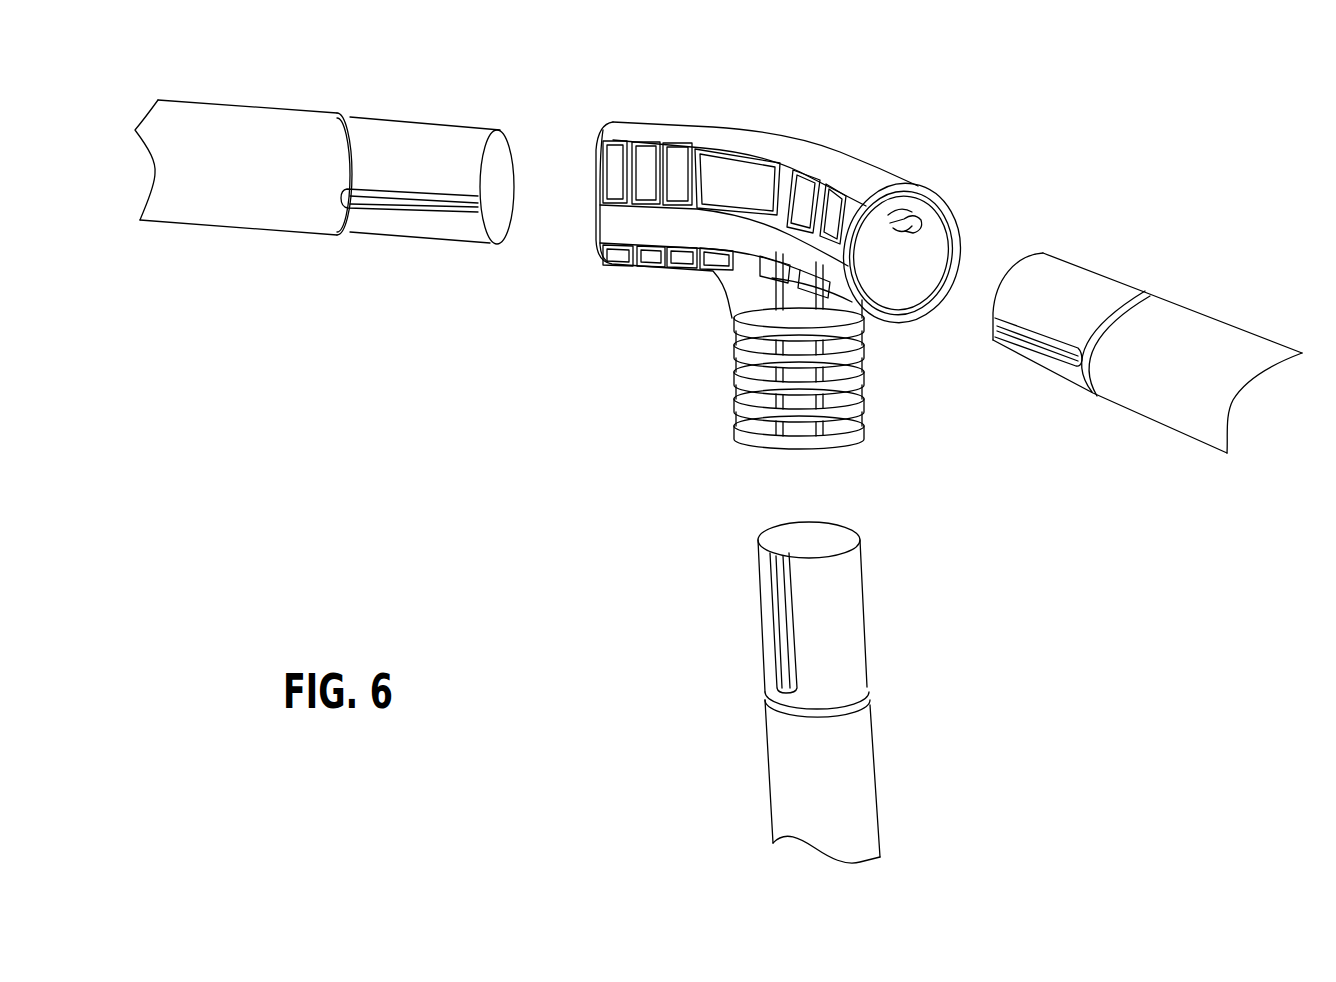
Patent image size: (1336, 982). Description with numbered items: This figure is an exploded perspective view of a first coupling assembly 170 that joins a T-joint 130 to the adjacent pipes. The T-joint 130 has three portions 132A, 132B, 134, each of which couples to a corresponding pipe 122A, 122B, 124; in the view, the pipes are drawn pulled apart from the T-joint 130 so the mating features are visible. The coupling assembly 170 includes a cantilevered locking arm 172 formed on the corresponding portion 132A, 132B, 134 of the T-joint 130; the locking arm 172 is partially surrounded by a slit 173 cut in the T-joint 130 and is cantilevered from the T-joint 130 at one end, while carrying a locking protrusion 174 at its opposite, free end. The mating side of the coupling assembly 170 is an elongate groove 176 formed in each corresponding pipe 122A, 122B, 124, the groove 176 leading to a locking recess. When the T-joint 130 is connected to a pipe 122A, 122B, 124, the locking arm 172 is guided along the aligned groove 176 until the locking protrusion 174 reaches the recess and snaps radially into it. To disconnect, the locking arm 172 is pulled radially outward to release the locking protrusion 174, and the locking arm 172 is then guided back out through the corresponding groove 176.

The pipe 122A is at (1183, 333).
The pipe 122B is at (247, 197).
The pipe 124 is at (858, 762).
The T-joint 130 is at (860, 447).
The portion of the T-joint 132A is at (863, 310).
The portion of the T-joint 132B is at (657, 122).
The portion of the T-joint 134 is at (730, 390).
The first coupling assembly 170 is at (1058, 193).
The cantilevered locking arm 172 is at (900, 212).
The slit 173 is at (927, 222).
The locking protrusion 174 is at (913, 224).
The elongate groove 176 is at (430, 210).